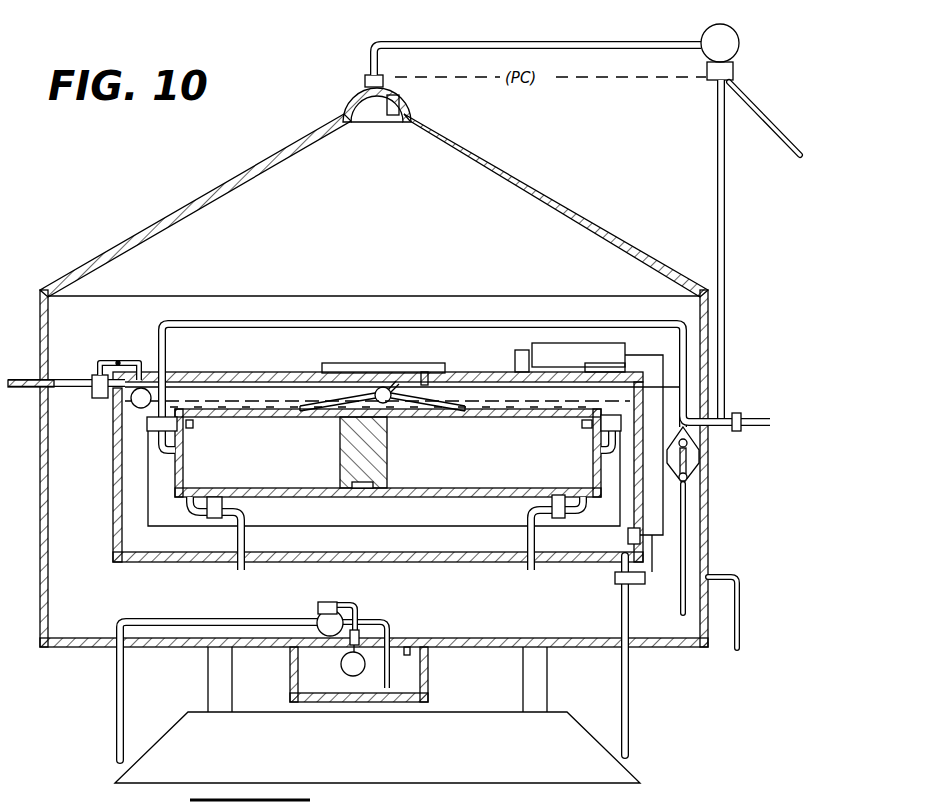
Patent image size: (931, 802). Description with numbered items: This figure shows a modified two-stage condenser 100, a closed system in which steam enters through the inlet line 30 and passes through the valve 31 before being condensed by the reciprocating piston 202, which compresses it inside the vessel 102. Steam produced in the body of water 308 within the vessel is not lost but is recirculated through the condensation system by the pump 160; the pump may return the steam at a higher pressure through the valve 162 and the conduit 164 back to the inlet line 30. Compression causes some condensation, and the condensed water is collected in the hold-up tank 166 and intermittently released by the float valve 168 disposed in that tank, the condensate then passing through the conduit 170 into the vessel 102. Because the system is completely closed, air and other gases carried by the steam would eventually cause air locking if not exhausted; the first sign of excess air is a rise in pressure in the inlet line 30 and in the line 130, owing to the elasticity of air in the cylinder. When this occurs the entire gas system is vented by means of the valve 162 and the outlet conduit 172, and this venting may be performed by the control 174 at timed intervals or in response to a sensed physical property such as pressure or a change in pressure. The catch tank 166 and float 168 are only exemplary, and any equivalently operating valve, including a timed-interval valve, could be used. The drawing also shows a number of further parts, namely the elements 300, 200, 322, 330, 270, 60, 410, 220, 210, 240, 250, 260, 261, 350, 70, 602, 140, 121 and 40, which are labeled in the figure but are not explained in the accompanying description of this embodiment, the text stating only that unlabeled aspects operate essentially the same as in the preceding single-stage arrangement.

The condenser 100 is at (78, 655).
The vessel 102 is at (178, 222).
The line 130 is at (578, 42).
The pump 160 is at (720, 26).
The valve 162 is at (734, 70).
The conduit 164 is at (727, 291).
The outlet conduit 172 is at (756, 114).
The control 174 is at (399, 105).
The line 30 is at (712, 432).
The valve 31 is at (742, 428).
The tank 300 is at (118, 519).
The vessel 200 is at (397, 497).
The reciprocating piston 202 is at (388, 456).
The cover plate 322 is at (396, 363).
The control unit 330 is at (598, 345).
The stirrer 270 is at (399, 395).
The body of water 308 is at (264, 401).
The inlet pipe 60 is at (82, 373).
The valve 410 is at (101, 400).
The inlet fitting 220 is at (182, 437).
The outlet fitting 210 is at (600, 425).
The drain fitting 240 is at (224, 496).
The drain fitting 250 is at (558, 492).
The drain pipe 260 is at (245, 572).
The drain pipe 261 is at (535, 572).
The hold-up tank 166 is at (699, 462).
The float valve 168 is at (690, 478).
The conduit 170 is at (690, 551).
The valve 350 is at (632, 590).
The drain pipe 70 is at (630, 718).
The overflow pipe 602 is at (739, 650).
The pump 140 is at (318, 607).
The pipe 121 is at (392, 630).
The pipe 40 is at (125, 710).